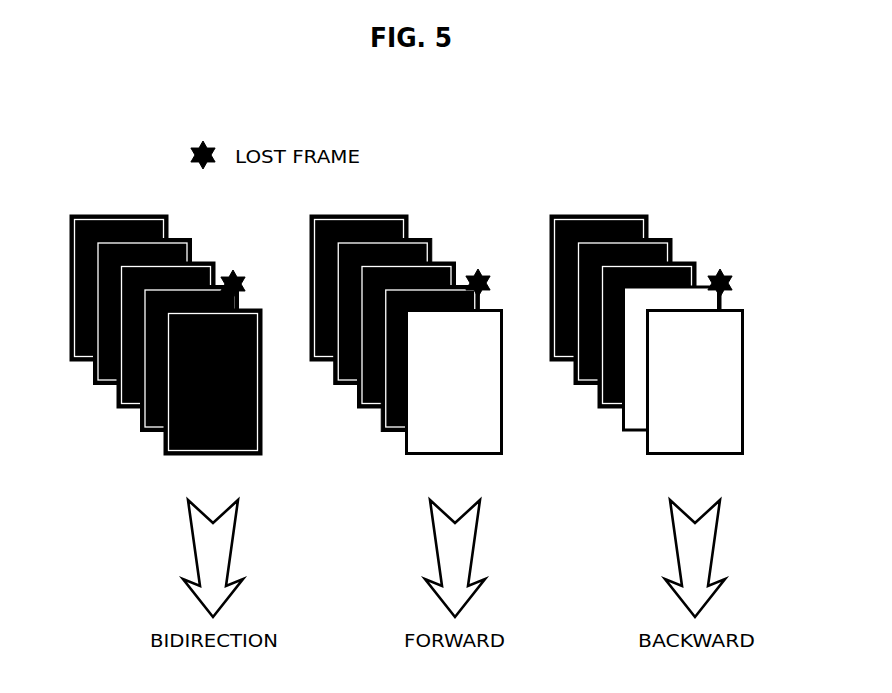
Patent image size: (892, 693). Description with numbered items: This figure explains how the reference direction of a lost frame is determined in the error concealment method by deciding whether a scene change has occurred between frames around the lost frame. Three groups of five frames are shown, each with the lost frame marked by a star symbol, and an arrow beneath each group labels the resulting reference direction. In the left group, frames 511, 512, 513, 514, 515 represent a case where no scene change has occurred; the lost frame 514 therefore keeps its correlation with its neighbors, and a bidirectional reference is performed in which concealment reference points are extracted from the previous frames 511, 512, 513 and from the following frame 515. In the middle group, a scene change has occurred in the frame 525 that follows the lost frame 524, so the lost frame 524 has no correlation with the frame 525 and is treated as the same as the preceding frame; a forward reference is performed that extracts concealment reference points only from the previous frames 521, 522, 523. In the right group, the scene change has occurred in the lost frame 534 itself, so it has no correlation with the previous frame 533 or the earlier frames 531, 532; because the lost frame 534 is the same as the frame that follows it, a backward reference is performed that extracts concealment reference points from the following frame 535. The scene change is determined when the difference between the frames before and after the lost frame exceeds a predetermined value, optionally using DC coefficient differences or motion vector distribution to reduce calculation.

The previous frame 511 is at (119, 288).
The previous frame 512 is at (143, 312).
The previous frame 513 is at (166, 335).
The lost frame 514 is at (190, 359).
The following frame 515 is at (213, 382).
The previous frame 521 is at (359, 288).
The previous frame 522 is at (383, 312).
The previous frame 523 is at (407, 335).
The lost frame 524 is at (430, 359).
The frame following the lost frame 525 is at (454, 382).
The previous frame 531 is at (599, 288).
The previous frame 532 is at (623, 312).
The previous frame 533 is at (647, 335).
The lost frame 534 is at (671, 358).
The frame following the lost frame 535 is at (695, 382).